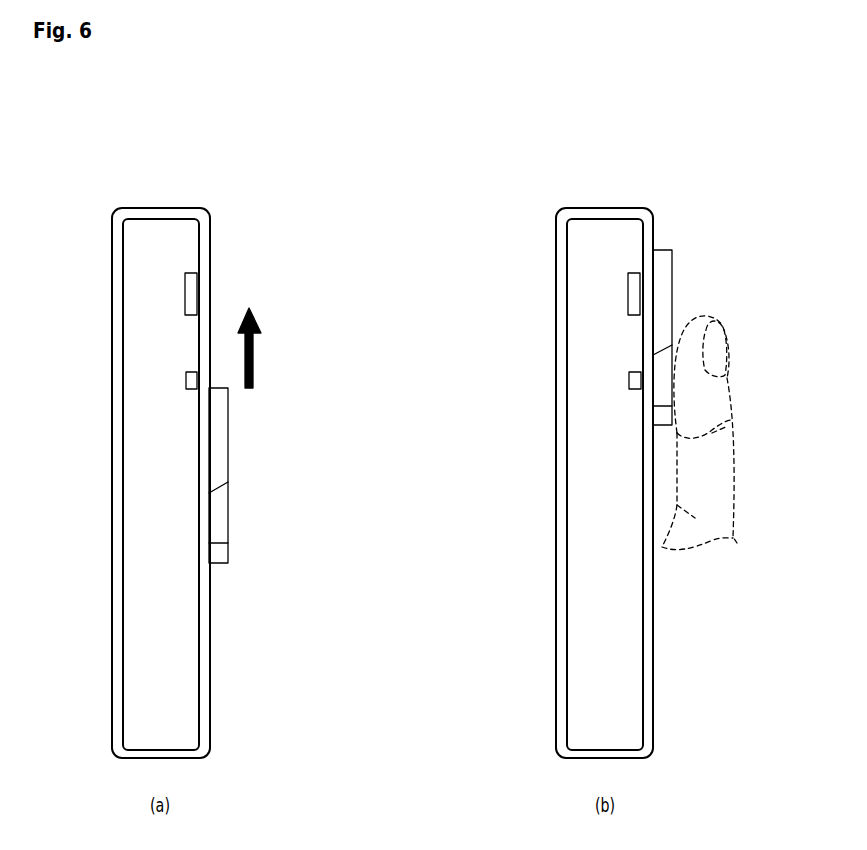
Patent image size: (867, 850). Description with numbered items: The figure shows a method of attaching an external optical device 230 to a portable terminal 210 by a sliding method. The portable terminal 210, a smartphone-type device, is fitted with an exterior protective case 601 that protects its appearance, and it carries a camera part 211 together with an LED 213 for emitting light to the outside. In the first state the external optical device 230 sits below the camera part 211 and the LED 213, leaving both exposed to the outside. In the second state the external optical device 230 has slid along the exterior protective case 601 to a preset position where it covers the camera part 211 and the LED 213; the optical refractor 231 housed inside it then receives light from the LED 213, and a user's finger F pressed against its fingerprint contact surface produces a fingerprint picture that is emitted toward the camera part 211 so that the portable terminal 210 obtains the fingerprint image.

The exterior protective case 601 is at (160, 207).
The portable terminal 210 is at (141, 457).
The camera part 211 is at (185, 294).
The LED 213 is at (186, 380).
The external optical device 230 is at (244, 413).
The optical refractor 231 is at (222, 512).
The finger F is at (725, 378).